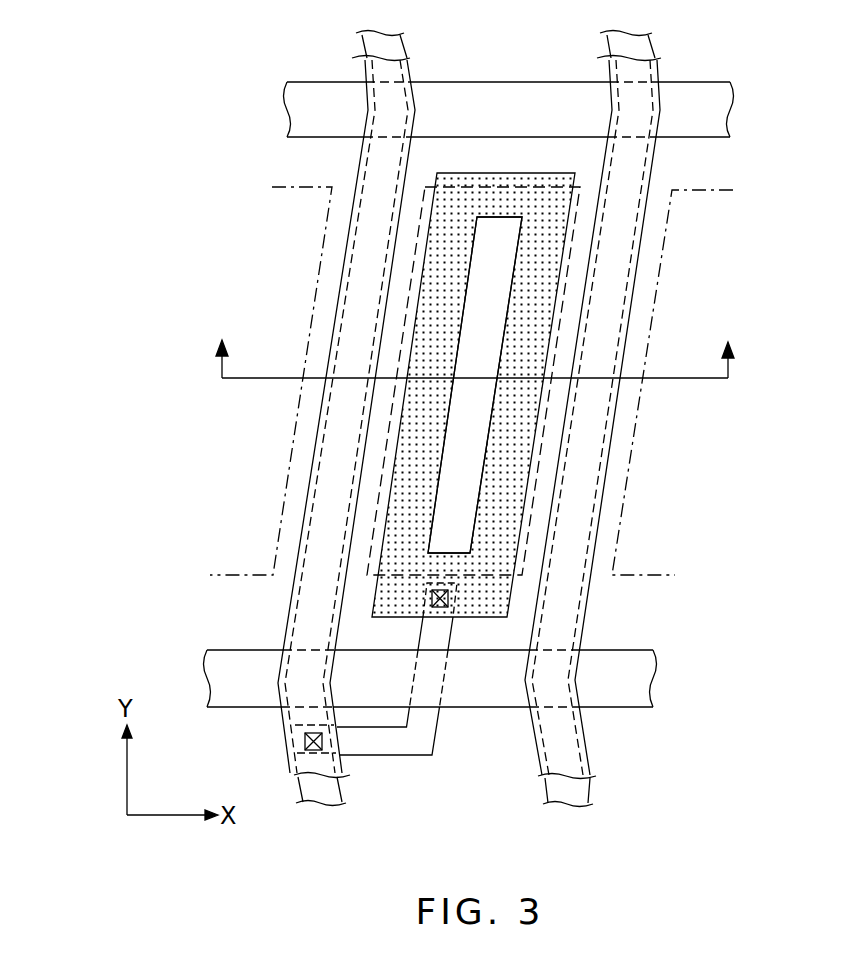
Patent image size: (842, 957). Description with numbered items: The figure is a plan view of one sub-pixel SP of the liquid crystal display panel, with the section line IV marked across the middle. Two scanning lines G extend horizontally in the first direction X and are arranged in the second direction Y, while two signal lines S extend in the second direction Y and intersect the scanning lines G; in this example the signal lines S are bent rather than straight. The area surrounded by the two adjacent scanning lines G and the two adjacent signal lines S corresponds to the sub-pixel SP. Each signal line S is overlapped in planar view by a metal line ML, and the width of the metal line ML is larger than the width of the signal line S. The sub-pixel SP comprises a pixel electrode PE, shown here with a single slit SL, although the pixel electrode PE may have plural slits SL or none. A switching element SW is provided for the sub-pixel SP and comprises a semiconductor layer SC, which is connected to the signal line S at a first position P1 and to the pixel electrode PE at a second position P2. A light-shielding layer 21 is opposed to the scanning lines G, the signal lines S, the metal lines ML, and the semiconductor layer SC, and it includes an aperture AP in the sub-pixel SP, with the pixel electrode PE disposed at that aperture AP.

The scanning line G is at (313, 82).
The signal line S is at (358, 43).
The metal line ML is at (412, 72).
The pixel electrode PE is at (542, 173).
The slit SL is at (457, 535).
The aperture AP is at (456, 174).
The sub-pixel SP is at (506, 150).
The light-shielding layer 21 is at (320, 267).
The semiconductor layer SC is at (375, 755).
The switching element SW is at (432, 774).
The first position P1 is at (300, 740).
The second position P2 is at (431, 600).
The section line IV- IV is at (471, 346).